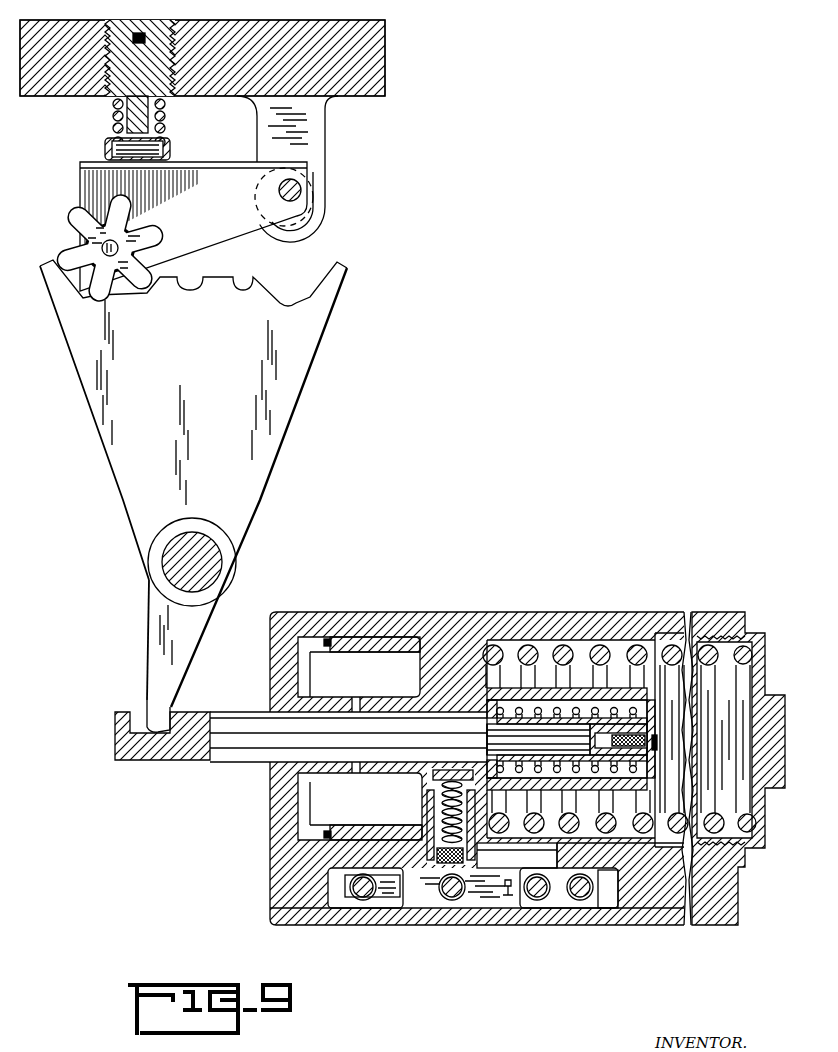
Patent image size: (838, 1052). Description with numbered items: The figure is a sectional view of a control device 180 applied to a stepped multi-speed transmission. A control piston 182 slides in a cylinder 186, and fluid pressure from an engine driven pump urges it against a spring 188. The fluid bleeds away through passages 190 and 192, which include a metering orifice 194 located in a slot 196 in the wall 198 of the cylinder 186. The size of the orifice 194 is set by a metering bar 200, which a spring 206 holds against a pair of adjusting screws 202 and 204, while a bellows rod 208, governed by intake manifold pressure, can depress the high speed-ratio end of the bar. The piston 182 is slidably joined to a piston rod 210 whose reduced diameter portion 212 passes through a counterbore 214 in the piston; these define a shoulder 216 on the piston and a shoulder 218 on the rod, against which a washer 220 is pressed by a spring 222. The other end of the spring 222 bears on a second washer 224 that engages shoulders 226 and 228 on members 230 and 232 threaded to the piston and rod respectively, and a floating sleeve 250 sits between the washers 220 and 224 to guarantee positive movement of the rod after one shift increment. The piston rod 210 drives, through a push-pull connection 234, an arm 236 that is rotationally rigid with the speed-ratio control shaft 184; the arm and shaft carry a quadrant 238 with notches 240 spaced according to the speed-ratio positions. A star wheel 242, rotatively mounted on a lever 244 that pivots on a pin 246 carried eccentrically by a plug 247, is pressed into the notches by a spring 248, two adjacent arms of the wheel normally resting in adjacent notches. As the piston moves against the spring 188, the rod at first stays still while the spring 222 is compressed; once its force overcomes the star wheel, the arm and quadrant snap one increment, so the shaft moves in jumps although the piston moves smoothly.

The control device 180 is at (505, 761).
The control piston 182 is at (360, 642).
The speed-ratio control shaft 184 is at (180, 557).
The cylinder 186 is at (298, 641).
The spring 188 is at (567, 647).
The passage 190 is at (433, 773).
The passage 192 is at (430, 800).
The metering orifice 194 is at (450, 868).
The slot 196 is at (522, 902).
The wall 198 is at (557, 853).
The metering bar 200 is at (510, 896).
The adjusting screw 202 is at (452, 898).
The adjusting screw 204 is at (541, 899).
The spring 206 is at (355, 896).
The bellows rod 208 is at (586, 899).
The piston rod 210 is at (265, 750).
The reduced diameter portion 212 is at (541, 722).
The counterbore 214 is at (572, 700).
The shoulder 216 is at (488, 702).
The shoulder 218 is at (487, 730).
The washer 220 is at (546, 740).
The spring 222 is at (560, 780).
The second washer 224 is at (654, 714).
The shoulder 226 is at (653, 688).
The shoulder 228 is at (657, 758).
The member 230 is at (652, 620).
The member 232 is at (658, 742).
The push-pull connection 234 is at (150, 696).
The arm 236 is at (160, 634).
The quadrant 238 is at (304, 373).
The notches 240 is at (249, 277).
The star wheel 242 is at (73, 229).
The lever 244 is at (243, 172).
The pin 246 is at (300, 189).
The plug 247 is at (311, 222).
The spring 248 is at (166, 118).
The floating sleeve 250 is at (548, 768).